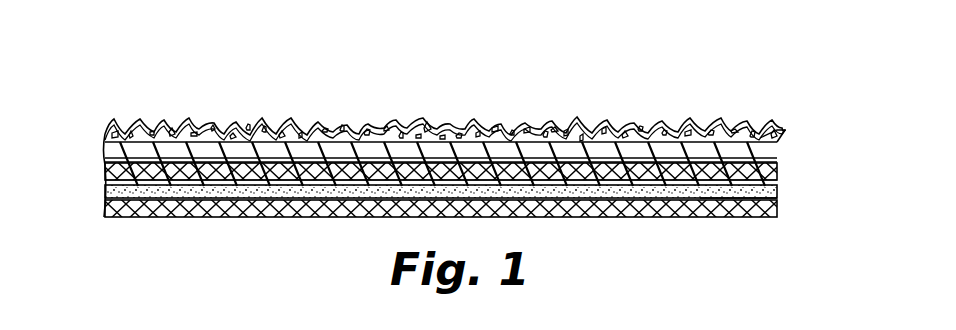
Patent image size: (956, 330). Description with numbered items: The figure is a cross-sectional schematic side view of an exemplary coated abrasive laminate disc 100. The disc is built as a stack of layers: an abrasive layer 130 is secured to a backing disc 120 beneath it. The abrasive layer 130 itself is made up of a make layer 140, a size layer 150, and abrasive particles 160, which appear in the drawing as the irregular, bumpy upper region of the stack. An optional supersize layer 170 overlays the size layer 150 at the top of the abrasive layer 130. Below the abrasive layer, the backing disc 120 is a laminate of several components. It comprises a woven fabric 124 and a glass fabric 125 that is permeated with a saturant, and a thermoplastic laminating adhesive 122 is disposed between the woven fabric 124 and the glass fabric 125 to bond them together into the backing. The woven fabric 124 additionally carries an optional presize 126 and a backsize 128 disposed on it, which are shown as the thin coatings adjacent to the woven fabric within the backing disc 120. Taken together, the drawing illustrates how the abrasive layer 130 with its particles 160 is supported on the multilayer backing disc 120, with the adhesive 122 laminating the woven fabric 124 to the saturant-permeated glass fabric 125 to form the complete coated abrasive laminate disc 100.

The coated abrasive laminate disc 100 is at (687, 86).
The backing disc 120 is at (97, 162).
The thermoplastic laminating adhesive 122 is at (778, 196).
The woven fabric 124 is at (778, 173).
The glass fabric 125 is at (709, 215).
The presize 126 is at (777, 163).
The backsize 128 is at (778, 190).
The abrasive layer 130 is at (97, 123).
The make layer 140 is at (778, 146).
The size layer 150 is at (427, 120).
The abrasive particles 160 is at (553, 122).
The supersize layer 170 is at (340, 118).